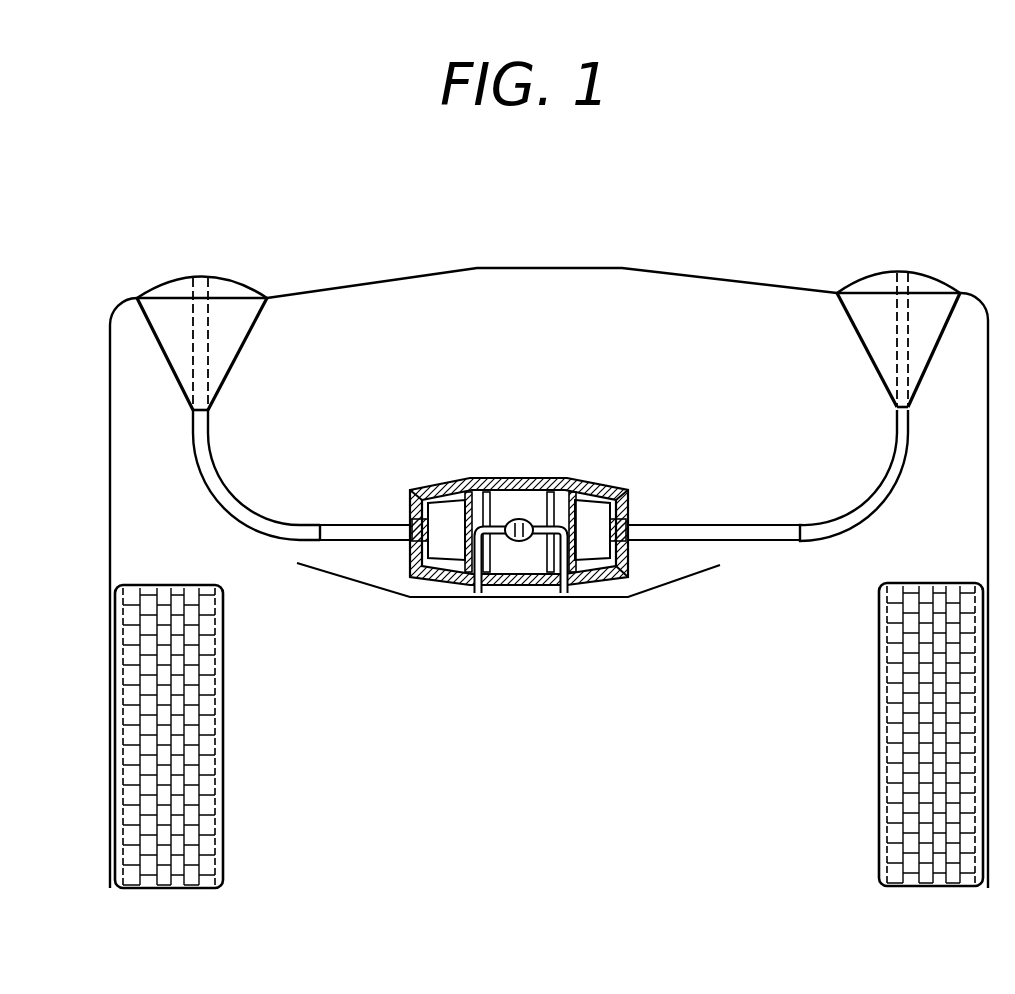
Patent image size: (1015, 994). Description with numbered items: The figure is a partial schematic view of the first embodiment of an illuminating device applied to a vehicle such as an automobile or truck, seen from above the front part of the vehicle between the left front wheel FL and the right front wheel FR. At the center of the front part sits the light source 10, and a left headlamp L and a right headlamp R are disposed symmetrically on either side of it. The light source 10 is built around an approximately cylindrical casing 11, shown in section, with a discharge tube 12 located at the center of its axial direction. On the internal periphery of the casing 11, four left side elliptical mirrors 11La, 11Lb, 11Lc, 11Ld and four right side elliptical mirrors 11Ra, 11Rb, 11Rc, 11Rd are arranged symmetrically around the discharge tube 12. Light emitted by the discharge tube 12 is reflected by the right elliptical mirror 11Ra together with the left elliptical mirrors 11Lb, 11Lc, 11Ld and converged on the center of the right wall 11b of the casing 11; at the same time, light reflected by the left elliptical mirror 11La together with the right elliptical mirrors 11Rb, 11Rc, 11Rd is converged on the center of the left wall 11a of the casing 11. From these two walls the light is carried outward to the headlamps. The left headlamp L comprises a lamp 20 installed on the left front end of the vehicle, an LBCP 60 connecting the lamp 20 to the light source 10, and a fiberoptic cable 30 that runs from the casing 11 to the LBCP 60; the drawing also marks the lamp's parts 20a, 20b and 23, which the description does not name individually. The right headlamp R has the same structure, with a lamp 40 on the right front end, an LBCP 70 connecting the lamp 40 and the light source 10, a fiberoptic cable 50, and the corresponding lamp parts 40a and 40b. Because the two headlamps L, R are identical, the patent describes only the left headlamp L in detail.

The light source 10 is at (541, 537).
The casing 11 is at (531, 492).
The left wall 11a is at (408, 568).
The right wall 11b is at (630, 567).
The left side elliptical mirror 11La is at (466, 563).
The left side elliptical mirror 11Lb is at (497, 492).
The left side elliptical mirror 11Lc is at (470, 495).
The left side elliptical mirror 11Ld is at (418, 490).
The right side elliptical mirror 11Ra is at (565, 565).
The right side elliptical mirror 11Rb is at (561, 490).
The right side elliptical mirror 11Rc is at (600, 494).
The right side elliptical mirror 11Rd is at (630, 498).
The discharge tube 12 is at (516, 546).
The lamp 20 is at (221, 306).
The left seat left side wall 20a is at (172, 348).
The left seat right side wall 20b is at (222, 348).
The left seat cushion 23 is at (237, 286).
The fiberoptic cable 30 is at (345, 536).
The lamp 40 is at (864, 301).
The right seat cushion 40a is at (930, 300).
The right seat side wall 40b is at (912, 352).
The fiberoptic cable 50 is at (766, 541).
The LBCP 60 is at (255, 502).
The LBCP 70 is at (852, 500).
The left headlamp L is at (241, 284).
The right headlamp R is at (856, 276).
The left front wheel FL is at (225, 748).
The right front wheel FR is at (879, 748).